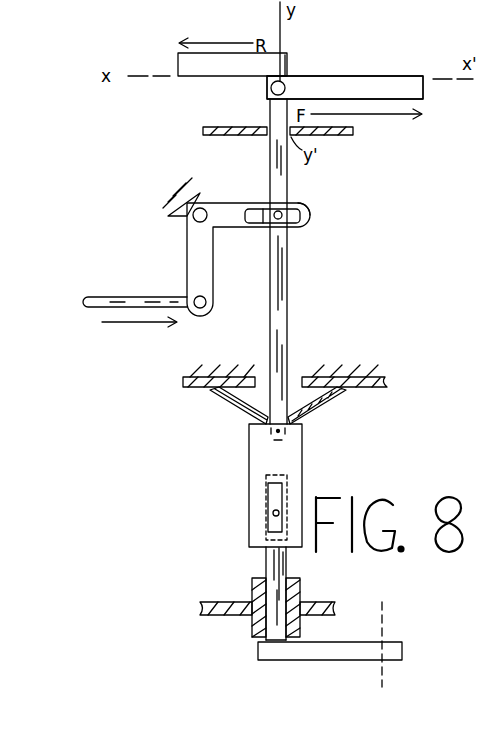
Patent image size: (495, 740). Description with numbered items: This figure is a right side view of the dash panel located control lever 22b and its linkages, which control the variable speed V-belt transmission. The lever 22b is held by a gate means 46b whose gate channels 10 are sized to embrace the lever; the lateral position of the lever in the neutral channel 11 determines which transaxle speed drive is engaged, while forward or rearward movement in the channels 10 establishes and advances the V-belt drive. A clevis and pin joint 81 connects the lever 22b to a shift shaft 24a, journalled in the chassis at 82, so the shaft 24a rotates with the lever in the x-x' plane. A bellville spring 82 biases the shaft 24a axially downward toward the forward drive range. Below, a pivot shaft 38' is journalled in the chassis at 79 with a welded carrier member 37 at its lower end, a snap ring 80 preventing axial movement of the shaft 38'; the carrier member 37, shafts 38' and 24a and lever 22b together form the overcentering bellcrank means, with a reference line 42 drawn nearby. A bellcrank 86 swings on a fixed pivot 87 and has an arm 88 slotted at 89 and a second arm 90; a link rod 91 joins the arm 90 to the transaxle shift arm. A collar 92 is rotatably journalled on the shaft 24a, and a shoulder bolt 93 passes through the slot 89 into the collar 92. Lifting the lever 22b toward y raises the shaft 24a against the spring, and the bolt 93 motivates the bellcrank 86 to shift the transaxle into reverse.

The gate channels 10 is at (188, 62).
The gate means 46b is at (340, 84).
The neutral channel 11 is at (289, 56).
The control lever 22b is at (271, 90).
The shift shaft 24a is at (286, 255).
The chassis journal and bellville spring 82 is at (258, 136).
The bellcrank 86 is at (196, 247).
The fixed pivot 87 is at (202, 206).
The arm 88 is at (306, 214).
The slot 89 is at (297, 228).
The arm 90 is at (206, 296).
The link rod 91 is at (88, 296).
The collar 92 is at (296, 200).
The shoulder bolt 93 is at (266, 219).
The clevis and pin joint 81 is at (264, 460).
The snap ring 80 is at (261, 572).
The pivot shaft 38' is at (304, 586).
The chassis journal 79 is at (252, 588).
The reference line 42 is at (384, 606).
The carrier member 37 is at (392, 640).